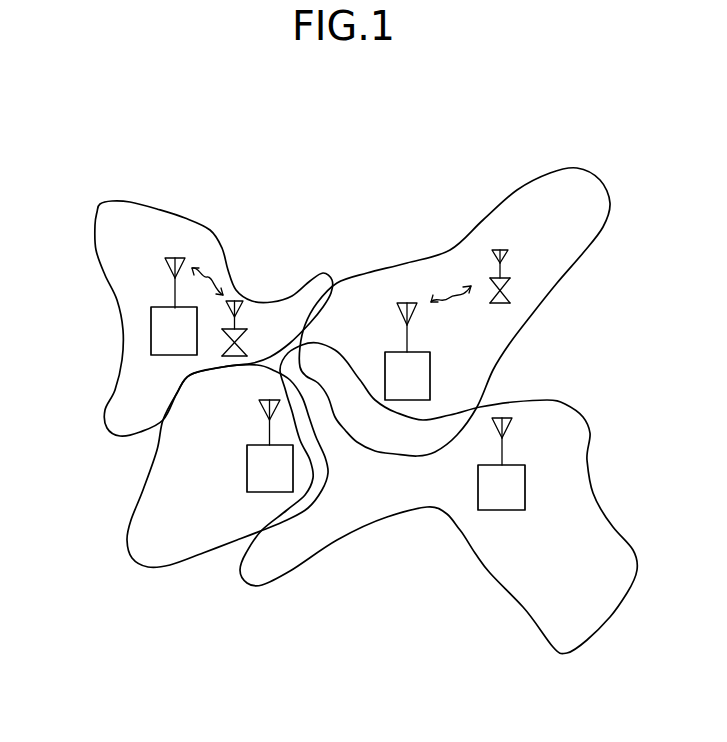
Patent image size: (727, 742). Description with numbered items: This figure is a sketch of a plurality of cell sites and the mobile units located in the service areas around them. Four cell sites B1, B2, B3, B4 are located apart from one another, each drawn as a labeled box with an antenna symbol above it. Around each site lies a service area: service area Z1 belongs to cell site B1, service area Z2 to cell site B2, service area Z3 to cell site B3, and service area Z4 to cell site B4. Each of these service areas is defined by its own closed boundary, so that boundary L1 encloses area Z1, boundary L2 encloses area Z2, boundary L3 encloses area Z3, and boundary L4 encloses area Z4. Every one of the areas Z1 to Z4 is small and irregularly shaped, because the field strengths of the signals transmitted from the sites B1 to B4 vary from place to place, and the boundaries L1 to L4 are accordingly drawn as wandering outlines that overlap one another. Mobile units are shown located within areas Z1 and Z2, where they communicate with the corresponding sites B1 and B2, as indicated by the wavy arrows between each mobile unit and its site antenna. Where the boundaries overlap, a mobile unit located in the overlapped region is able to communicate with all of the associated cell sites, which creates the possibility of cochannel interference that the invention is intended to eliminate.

The boundary L1 is at (203, 223).
The boundary L2 is at (443, 253).
The boundary L3 is at (127, 540).
The boundary L4 is at (337, 543).
The service area Z1 is at (182, 287).
The service area Z2 is at (432, 325).
The service area Z3 is at (245, 446).
The service area Z4 is at (449, 464).
The cell site B1 is at (174, 306).
The cell site B2 is at (407, 351).
The cell site B3 is at (270, 446).
The cell site B4 is at (501, 464).